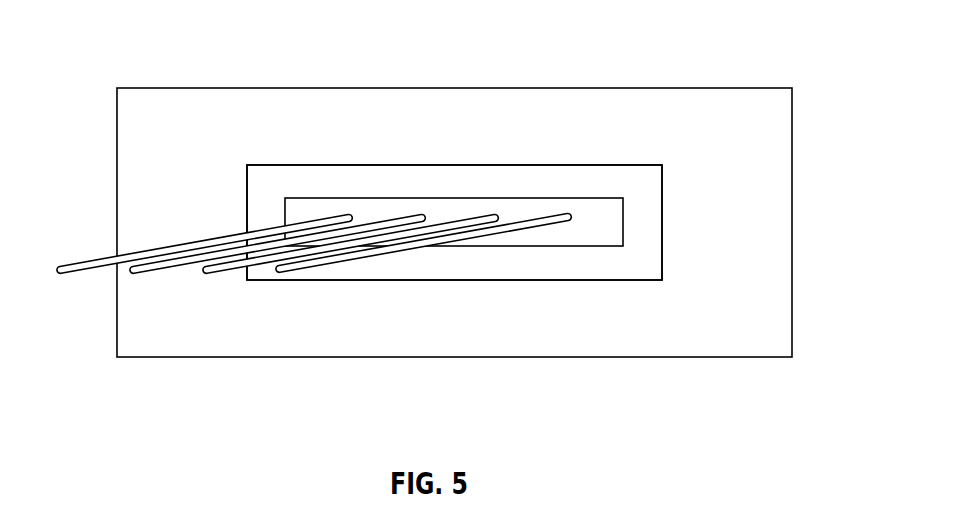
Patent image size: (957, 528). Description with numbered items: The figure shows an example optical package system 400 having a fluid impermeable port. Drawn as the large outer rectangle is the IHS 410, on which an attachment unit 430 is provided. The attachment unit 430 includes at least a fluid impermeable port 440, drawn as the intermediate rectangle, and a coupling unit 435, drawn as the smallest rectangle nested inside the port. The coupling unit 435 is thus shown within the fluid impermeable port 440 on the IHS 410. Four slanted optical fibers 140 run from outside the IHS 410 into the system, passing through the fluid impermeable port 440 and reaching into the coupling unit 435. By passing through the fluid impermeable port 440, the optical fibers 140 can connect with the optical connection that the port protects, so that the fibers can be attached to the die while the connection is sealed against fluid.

The optical package system 400 is at (137, 47).
The IHS 410 is at (364, 112).
The attachment unit 430 is at (688, 262).
The fluid impermeable port 440 is at (582, 272).
The coupling unit 435 is at (587, 208).
The optical fibers 140 is at (96, 294).